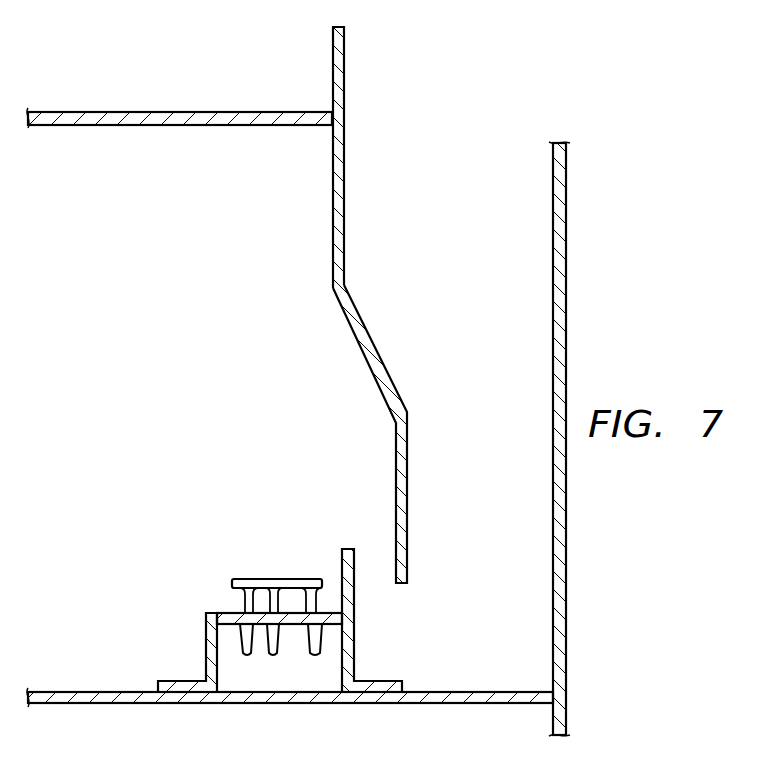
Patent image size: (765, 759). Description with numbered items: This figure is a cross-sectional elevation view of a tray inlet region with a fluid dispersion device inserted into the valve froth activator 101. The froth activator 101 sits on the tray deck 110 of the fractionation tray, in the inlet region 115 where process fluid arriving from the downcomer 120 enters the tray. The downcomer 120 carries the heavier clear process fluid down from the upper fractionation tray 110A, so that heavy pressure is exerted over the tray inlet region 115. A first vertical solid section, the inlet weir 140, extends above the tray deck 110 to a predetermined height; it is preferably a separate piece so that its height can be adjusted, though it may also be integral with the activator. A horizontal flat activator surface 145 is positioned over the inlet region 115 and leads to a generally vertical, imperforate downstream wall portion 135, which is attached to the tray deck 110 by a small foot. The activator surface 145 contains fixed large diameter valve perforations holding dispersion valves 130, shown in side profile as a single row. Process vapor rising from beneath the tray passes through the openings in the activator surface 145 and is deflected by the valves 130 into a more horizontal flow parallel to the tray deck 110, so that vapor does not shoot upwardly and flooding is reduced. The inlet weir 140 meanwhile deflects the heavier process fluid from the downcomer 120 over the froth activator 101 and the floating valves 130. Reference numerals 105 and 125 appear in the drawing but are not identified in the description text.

The froth activator 101 is at (278, 602).
The rear wall / panel 105 is at (560, 352).
The tray deck 110 is at (93, 697).
The upper fractionation tray 110A is at (118, 117).
The inlet region 115 is at (502, 668).
The downcomer 120 is at (382, 378).
The vertical plate 125 is at (338, 76).
The dispersion valves 130 is at (277, 573).
The downstream wall portion 135 is at (201, 650).
The inlet weir 140 is at (359, 594).
The activator surface 145 is at (226, 613).